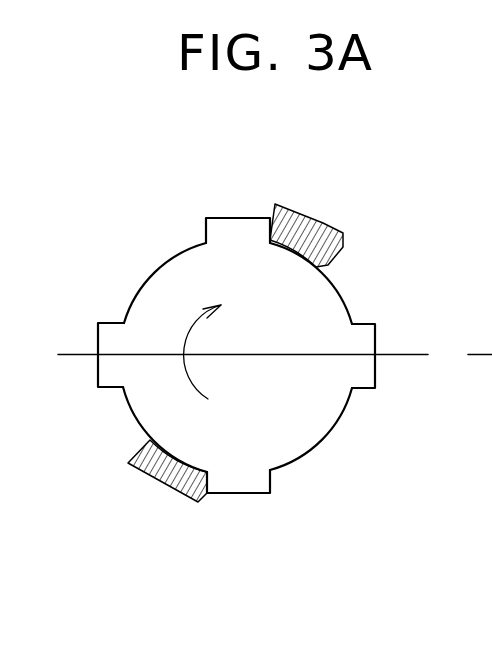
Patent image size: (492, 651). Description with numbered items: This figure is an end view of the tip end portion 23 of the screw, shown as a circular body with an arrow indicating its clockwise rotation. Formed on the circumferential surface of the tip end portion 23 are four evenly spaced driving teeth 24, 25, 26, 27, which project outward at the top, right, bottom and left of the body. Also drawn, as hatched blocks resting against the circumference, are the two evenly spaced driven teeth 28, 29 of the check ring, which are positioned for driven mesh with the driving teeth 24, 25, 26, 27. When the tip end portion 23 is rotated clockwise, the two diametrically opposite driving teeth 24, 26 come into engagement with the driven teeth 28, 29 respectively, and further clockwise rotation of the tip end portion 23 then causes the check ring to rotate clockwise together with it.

The tip end portion 23 is at (322, 440).
The driving tooth 24 is at (217, 217).
The driving tooth 25 is at (377, 382).
The driving tooth 26 is at (255, 493).
The driving tooth 27 is at (98, 372).
The driven tooth 28 is at (333, 232).
The driven tooth 29 is at (168, 497).